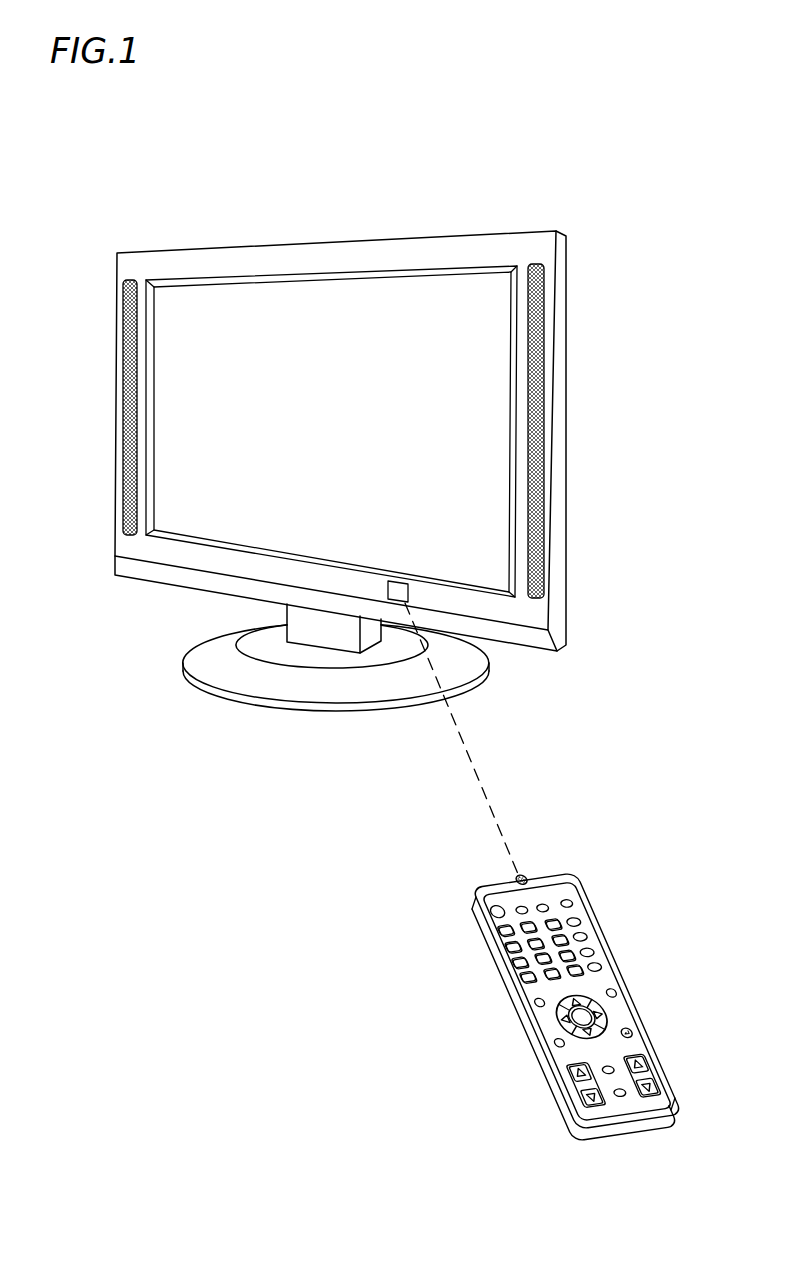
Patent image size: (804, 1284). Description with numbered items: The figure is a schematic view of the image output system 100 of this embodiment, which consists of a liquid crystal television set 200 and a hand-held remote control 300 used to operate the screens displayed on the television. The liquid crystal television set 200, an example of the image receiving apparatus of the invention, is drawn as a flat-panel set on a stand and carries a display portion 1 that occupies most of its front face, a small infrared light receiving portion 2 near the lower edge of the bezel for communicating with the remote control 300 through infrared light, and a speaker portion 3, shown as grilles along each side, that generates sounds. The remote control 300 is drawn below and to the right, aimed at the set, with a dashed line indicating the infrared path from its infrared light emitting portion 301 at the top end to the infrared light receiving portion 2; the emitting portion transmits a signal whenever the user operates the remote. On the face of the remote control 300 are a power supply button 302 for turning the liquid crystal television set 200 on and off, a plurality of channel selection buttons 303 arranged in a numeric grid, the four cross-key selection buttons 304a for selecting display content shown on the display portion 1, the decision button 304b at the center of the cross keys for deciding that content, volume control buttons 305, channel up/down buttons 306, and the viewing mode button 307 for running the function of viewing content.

The image output system 100 is at (158, 204).
The display portion 1 is at (305, 302).
The infrared light receiving portion 2 is at (397, 593).
The speaker portion 3 is at (528, 264).
The liquid crystal television set 200 is at (566, 249).
The remote control 300 is at (574, 829).
The infrared light emitting portion 301 is at (523, 876).
The power supply button 302 is at (503, 906).
The channel selection buttons 303 is at (498, 926).
The cross-key selection buttons 304a is at (605, 1010).
The decision button 304b is at (586, 1006).
The volume control buttons 305 is at (578, 1068).
The channel up/down buttons 306 is at (640, 1062).
The viewing mode button 307 is at (574, 902).